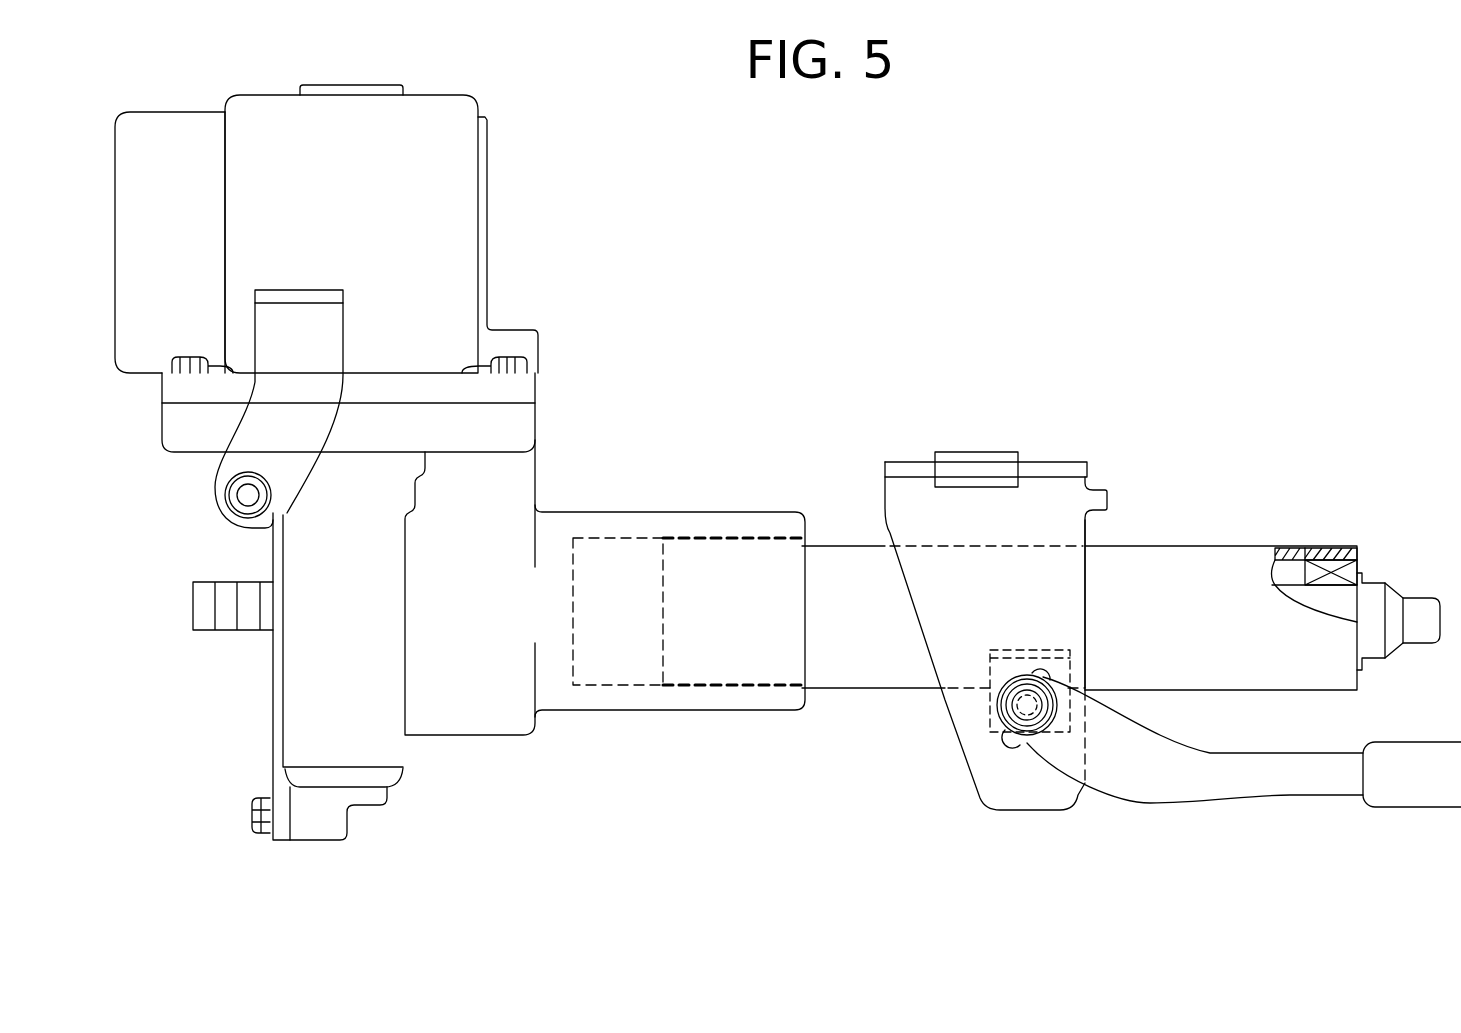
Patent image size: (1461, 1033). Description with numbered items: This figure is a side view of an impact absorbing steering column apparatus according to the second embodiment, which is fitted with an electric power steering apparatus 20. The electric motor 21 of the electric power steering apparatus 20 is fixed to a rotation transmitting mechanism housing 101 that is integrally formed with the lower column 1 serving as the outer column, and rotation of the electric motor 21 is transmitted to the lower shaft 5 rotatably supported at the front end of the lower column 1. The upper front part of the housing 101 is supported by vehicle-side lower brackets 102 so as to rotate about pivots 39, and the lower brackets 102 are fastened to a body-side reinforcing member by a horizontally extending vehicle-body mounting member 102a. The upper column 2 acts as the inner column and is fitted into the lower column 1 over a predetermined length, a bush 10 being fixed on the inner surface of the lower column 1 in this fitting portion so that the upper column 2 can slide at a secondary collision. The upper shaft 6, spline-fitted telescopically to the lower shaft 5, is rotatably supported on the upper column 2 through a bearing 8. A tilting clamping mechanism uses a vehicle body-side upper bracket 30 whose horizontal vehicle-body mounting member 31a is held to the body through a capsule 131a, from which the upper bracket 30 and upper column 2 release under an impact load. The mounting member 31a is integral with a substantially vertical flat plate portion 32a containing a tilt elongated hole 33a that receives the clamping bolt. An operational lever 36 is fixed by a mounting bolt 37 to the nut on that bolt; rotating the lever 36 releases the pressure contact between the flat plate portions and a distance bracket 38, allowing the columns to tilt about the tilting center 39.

The electric power steering apparatus 20 is at (522, 290).
The electric motor 21 is at (487, 141).
The vehicle-body mounting member 102a is at (302, 290).
The vehicle-side lower bracket 102 is at (237, 452).
The pivot 39 is at (255, 495).
The rotation transmitting mechanism housing 101 is at (517, 468).
The lower shaft 5 is at (226, 635).
The lower column 1 is at (689, 512).
The bush 10 is at (750, 540).
The upper column 2 is at (1238, 546).
The vehicle body-side upper bracket 30 is at (1098, 460).
The vehicle-body mounting member 31a is at (1040, 460).
The capsule 131a is at (957, 452).
The flat plate portion 32a is at (1073, 552).
The mounting bolt 37 is at (1047, 695).
The distance bracket 38 is at (985, 716).
The tilt elongated hole 33a is at (1030, 740).
The operational lever 36 is at (1143, 805).
The bearing 8 is at (1328, 556).
The upper shaft 6 is at (1370, 580).